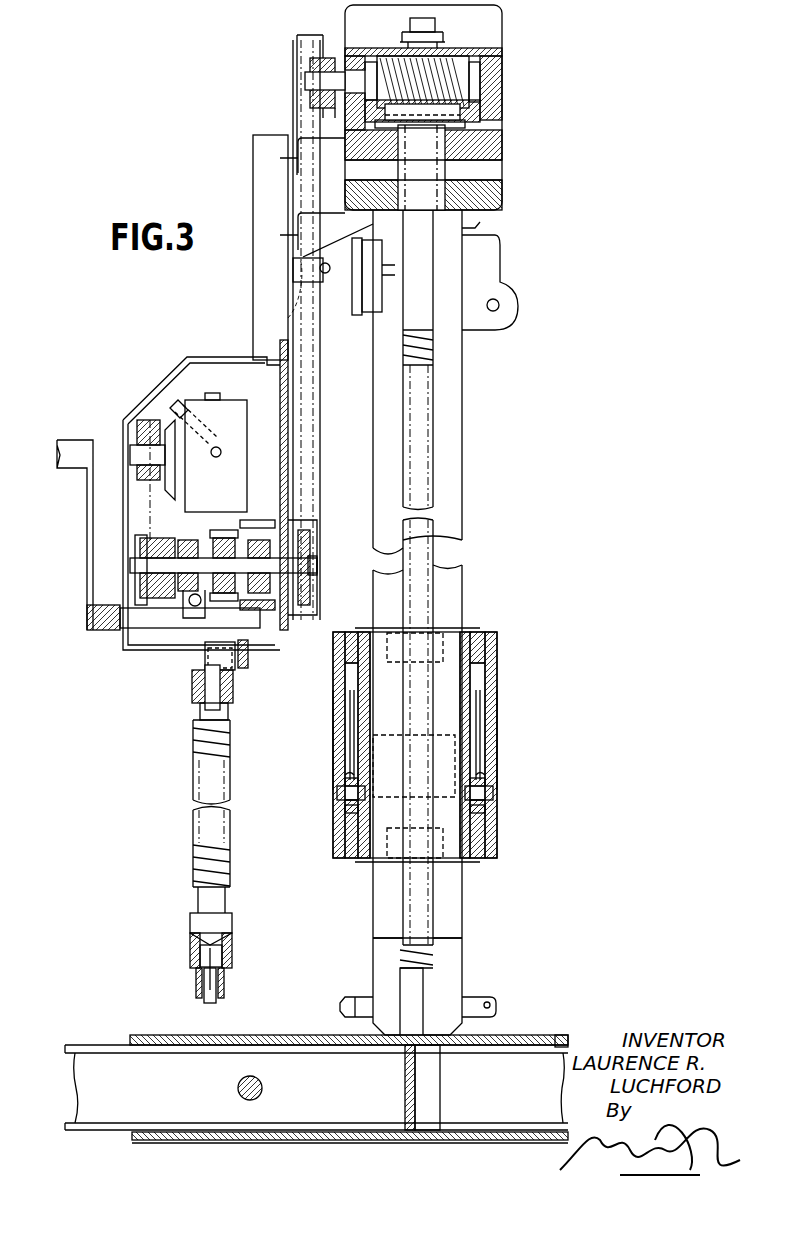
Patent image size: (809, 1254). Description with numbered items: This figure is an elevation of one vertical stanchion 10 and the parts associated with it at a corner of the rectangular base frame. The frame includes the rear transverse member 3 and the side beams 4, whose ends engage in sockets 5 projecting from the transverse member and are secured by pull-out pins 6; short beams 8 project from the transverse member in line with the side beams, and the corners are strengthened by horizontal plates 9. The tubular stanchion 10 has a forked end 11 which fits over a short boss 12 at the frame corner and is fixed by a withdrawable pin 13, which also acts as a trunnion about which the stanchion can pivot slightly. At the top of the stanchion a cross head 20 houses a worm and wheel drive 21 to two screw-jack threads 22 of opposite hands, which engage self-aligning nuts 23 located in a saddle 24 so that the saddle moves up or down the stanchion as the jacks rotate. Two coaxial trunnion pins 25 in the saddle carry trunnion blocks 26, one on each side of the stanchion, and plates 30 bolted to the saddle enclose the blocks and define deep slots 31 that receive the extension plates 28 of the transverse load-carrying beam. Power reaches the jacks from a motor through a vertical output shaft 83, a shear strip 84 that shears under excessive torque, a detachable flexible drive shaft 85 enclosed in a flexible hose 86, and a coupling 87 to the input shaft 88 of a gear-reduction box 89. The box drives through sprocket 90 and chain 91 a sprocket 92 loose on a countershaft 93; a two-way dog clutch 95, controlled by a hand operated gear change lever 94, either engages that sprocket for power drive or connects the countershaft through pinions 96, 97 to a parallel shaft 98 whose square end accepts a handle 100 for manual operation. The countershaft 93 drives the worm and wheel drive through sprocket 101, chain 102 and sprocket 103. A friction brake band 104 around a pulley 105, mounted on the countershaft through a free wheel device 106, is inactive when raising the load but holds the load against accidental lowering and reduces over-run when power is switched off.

The cross head 20 is at (502, 32).
The worm and wheel drive 21 is at (502, 84).
The sprocket 103 is at (300, 65).
The chain 102 is at (310, 422).
The vertical stanchion 10 is at (462, 494).
The screw-jack threads 22 is at (430, 455).
The saddle 24 is at (470, 632).
The deep slots 31 is at (345, 678).
The plates 30 is at (333, 745).
The extension plates 28 is at (348, 718).
The self-aligning nuts 23 is at (450, 763).
The trunnion blocks 26 is at (345, 778).
The trunnion pins 25 is at (353, 793).
The forked end 11 is at (445, 967).
The short boss 12 is at (420, 990).
The withdrawable pin 13 is at (498, 1004).
The side beams 4 is at (90, 1052).
The sockets 5 is at (140, 1037).
The horizontal plates 9 is at (538, 1036).
The short beams 8 is at (565, 1036).
The rear transverse member 3 is at (405, 1080).
The pull-out pins 6 is at (238, 1088).
The chain 91 is at (150, 500).
The gear-reduction box 89 is at (206, 452).
The sprocket 90 is at (140, 430).
The handle 100 is at (87, 527).
The countershaft 93 is at (180, 565).
The sprocket 92 is at (150, 592).
The two-way dog clutch 95 is at (183, 540).
The pinion 96 is at (237, 535).
The friction brake band 104 is at (250, 540).
The pulley 105 is at (262, 545).
The free wheel device 106 is at (278, 552).
The sprocket 101 is at (315, 573).
The parallel shaft 98 is at (108, 632).
The hand operated gear change lever 94 is at (190, 605).
The input shaft 88 is at (212, 650).
The pinion 97 is at (248, 660).
The coupling 87 is at (205, 680).
The flexible hose 86 is at (205, 898).
The detachable flexible drive shaft 85 is at (212, 935).
The shear strip 84 is at (193, 958).
The vertical output shaft 83 is at (204, 1000).